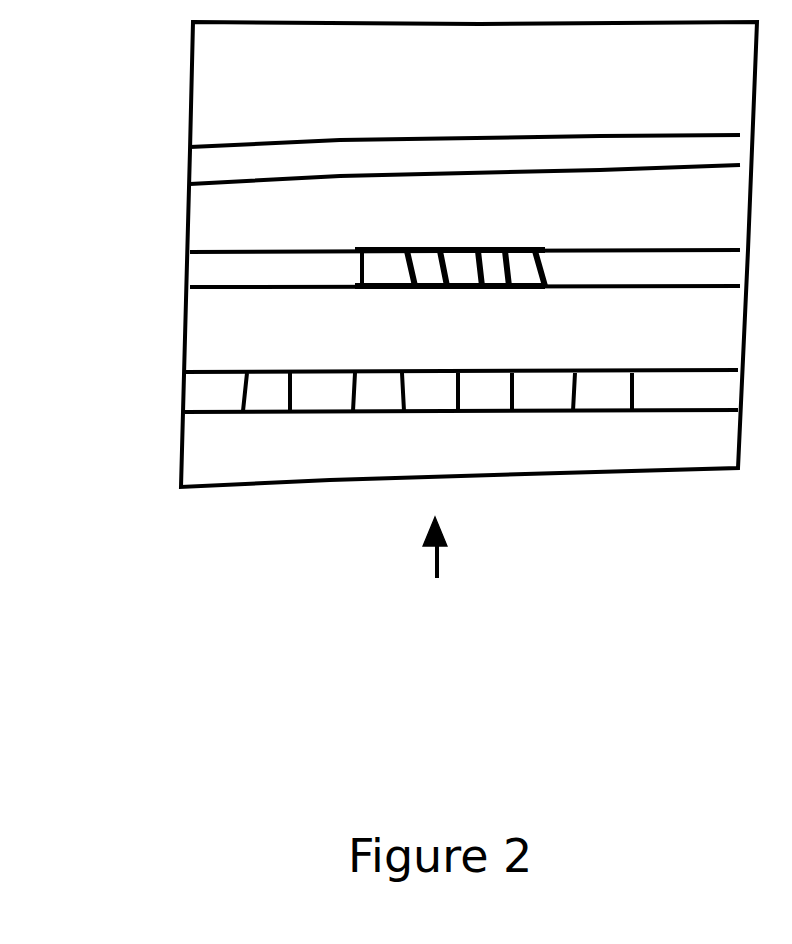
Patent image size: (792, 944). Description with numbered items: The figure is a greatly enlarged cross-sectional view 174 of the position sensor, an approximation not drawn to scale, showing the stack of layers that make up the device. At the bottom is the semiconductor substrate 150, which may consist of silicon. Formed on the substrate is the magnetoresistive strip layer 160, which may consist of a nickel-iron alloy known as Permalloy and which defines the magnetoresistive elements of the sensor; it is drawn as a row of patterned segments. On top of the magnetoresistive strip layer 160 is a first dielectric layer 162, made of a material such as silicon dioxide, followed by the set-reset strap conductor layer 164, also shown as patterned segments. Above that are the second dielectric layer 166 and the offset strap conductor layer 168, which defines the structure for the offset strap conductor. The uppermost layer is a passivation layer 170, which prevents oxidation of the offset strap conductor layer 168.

The substrate 150 is at (465, 439).
The magnetoresistive strip layer 160 is at (188, 392).
The first dielectric layer 162 is at (188, 335).
The set-reset strap conductor layer 164 is at (186, 272).
The second dielectric layer 166 is at (188, 222).
The offset strap conductor layer 168 is at (188, 170).
The passivation layer 170 is at (465, 113).
The cross-sectional view 174 is at (459, 577).